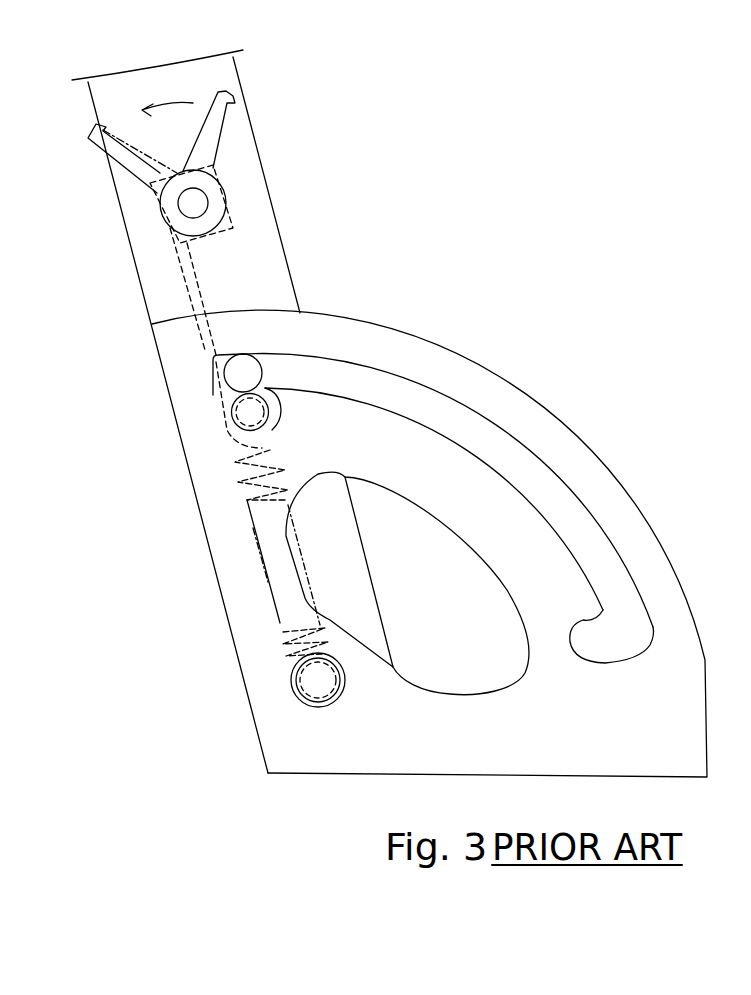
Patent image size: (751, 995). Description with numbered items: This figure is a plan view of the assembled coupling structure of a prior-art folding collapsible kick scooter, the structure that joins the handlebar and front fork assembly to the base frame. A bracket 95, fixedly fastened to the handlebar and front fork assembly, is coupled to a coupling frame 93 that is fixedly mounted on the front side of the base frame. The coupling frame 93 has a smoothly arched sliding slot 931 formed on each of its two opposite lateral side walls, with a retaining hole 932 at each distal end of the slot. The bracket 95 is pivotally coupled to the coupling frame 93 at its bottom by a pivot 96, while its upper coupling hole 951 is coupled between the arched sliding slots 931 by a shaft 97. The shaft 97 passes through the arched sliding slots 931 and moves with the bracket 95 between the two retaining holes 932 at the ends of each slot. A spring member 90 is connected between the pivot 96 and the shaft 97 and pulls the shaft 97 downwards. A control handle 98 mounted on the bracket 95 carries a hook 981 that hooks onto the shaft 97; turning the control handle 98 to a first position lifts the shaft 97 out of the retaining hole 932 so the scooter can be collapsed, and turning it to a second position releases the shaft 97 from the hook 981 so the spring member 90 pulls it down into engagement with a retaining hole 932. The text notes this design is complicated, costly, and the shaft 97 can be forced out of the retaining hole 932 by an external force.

The spring member 90 is at (270, 583).
The coupling frame 93 is at (640, 552).
The arched sliding slot 931 is at (437, 413).
The retaining hole 932 is at (270, 432).
The bracket 95 is at (145, 243).
The upper coupling hole 951 is at (227, 394).
The pivot 96 is at (313, 687).
The shaft 97 is at (250, 412).
The control handle 98 is at (207, 140).
The hook 981 is at (227, 433).